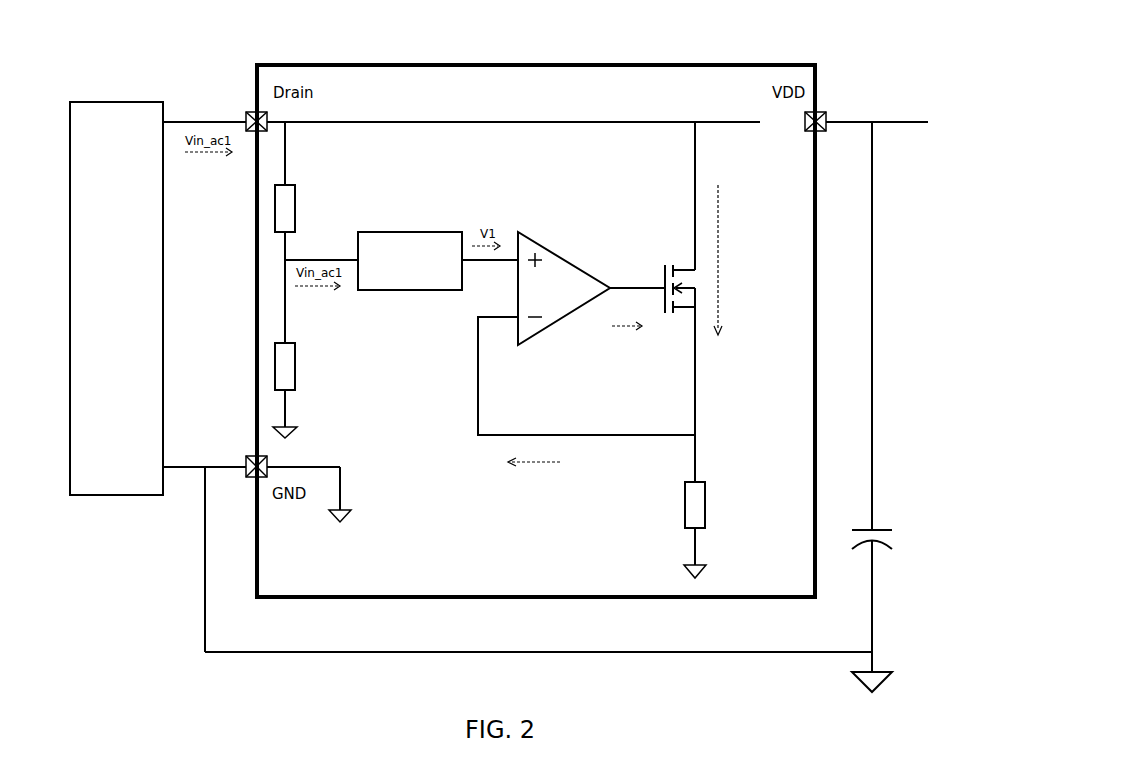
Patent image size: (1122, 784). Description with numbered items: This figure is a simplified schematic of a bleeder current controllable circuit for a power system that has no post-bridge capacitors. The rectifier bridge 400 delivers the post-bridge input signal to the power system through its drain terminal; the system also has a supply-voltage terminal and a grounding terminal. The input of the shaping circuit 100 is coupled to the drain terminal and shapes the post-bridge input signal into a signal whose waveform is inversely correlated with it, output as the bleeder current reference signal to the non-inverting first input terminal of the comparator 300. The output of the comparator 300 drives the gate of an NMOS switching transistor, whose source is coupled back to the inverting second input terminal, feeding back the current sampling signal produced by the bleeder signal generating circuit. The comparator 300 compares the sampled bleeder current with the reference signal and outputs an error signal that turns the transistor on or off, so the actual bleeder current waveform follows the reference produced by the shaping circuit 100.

The shaping circuit 100 is at (375, 228).
The comparator 300 is at (563, 278).
The rectifier bridge 400 is at (122, 122).